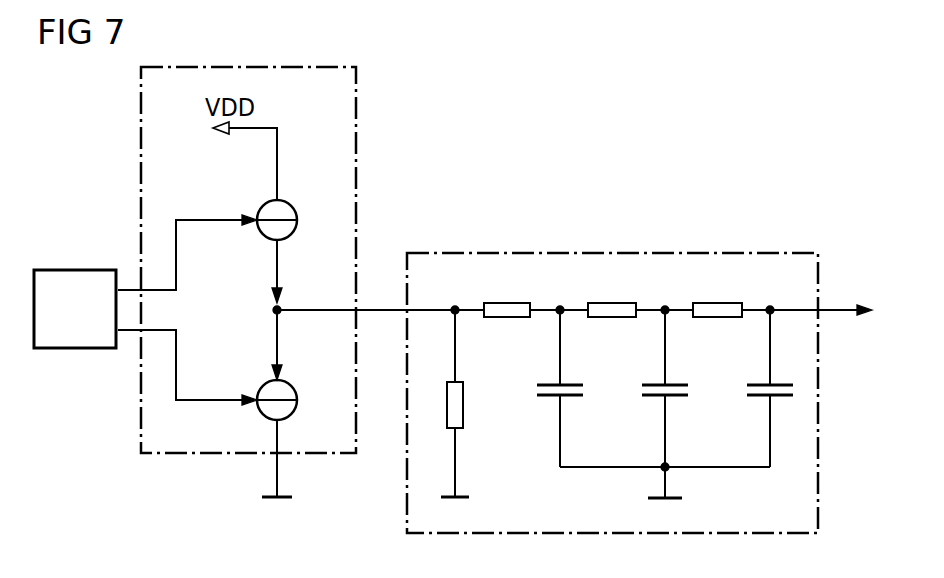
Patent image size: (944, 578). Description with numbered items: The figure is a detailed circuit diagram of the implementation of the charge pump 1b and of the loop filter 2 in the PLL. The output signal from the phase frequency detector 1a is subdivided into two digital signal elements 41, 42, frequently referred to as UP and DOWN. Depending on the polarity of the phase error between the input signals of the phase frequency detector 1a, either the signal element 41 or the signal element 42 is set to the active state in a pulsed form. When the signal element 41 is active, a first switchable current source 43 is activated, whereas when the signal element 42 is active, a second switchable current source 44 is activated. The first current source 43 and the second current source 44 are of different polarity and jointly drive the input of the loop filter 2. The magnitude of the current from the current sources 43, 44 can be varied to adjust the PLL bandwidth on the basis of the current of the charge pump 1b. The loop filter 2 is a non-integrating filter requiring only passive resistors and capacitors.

The phase frequency detector 1a is at (74, 270).
The charge pump 1b is at (357, 164).
The loop filter 2 is at (600, 253).
The signal element 41 is at (211, 219).
The signal element 42 is at (211, 399).
The first switchable current source 43 is at (293, 206).
The second switchable current source 44 is at (293, 386).